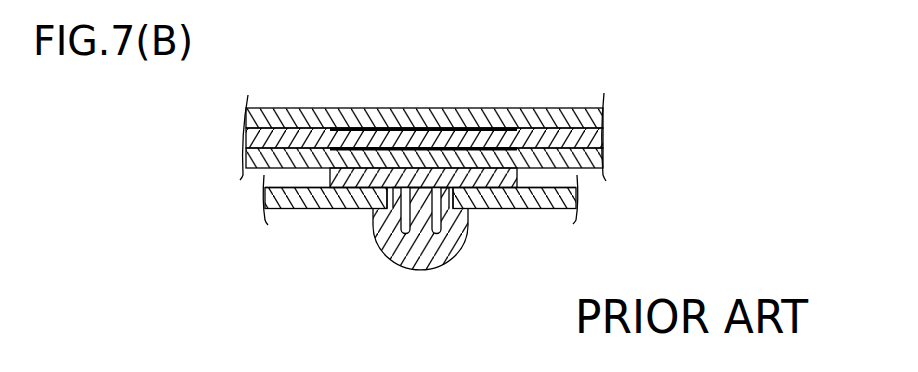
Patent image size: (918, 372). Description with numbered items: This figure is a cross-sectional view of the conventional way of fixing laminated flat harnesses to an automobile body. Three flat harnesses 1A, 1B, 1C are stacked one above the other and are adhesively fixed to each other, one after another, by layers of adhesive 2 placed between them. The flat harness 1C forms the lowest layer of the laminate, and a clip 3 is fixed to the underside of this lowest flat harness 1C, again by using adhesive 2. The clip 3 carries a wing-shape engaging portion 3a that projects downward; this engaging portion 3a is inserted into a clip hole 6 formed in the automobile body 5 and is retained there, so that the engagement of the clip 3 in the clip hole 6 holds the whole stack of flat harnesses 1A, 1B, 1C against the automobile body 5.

The flat harness 1A is at (565, 115).
The flat harness 1B is at (538, 131).
The flat harness 1C is at (310, 157).
The adhesive 2 is at (449, 149).
The clip 3 is at (404, 258).
The wing-shape engaging portion 3a is at (395, 203).
The automobile body 5 is at (511, 210).
The clip hole 6 is at (372, 210).